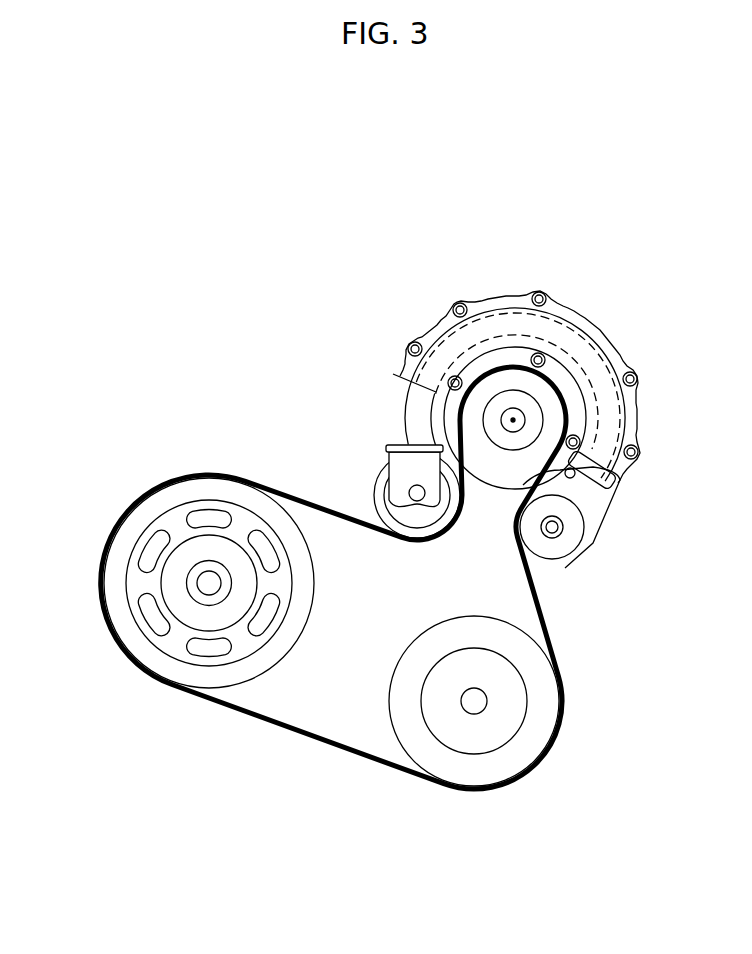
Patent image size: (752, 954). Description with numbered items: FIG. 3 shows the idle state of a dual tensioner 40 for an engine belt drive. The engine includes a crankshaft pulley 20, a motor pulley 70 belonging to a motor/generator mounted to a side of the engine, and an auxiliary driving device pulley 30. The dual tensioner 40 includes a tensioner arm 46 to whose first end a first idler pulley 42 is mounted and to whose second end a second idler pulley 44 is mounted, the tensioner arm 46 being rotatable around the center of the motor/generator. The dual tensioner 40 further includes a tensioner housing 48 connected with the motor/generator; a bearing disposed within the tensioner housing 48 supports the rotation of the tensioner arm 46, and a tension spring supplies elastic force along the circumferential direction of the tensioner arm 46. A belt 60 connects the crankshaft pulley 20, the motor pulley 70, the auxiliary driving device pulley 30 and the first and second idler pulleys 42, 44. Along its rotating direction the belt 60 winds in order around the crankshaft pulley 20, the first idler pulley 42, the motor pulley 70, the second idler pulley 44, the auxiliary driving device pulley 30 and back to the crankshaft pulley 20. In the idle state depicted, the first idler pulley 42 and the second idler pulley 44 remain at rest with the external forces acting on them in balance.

The crankshaft pulley 20 is at (172, 576).
The auxiliary driving device pulley 30 is at (542, 710).
The dual tensioner 40 is at (414, 289).
The first idler pulley 42 is at (380, 484).
The second idler pulley 44 is at (562, 563).
The tensioner arm 46 is at (637, 408).
The tensioner housing 48 is at (502, 299).
The belt 60 is at (323, 742).
The motor pulley 70 is at (540, 395).